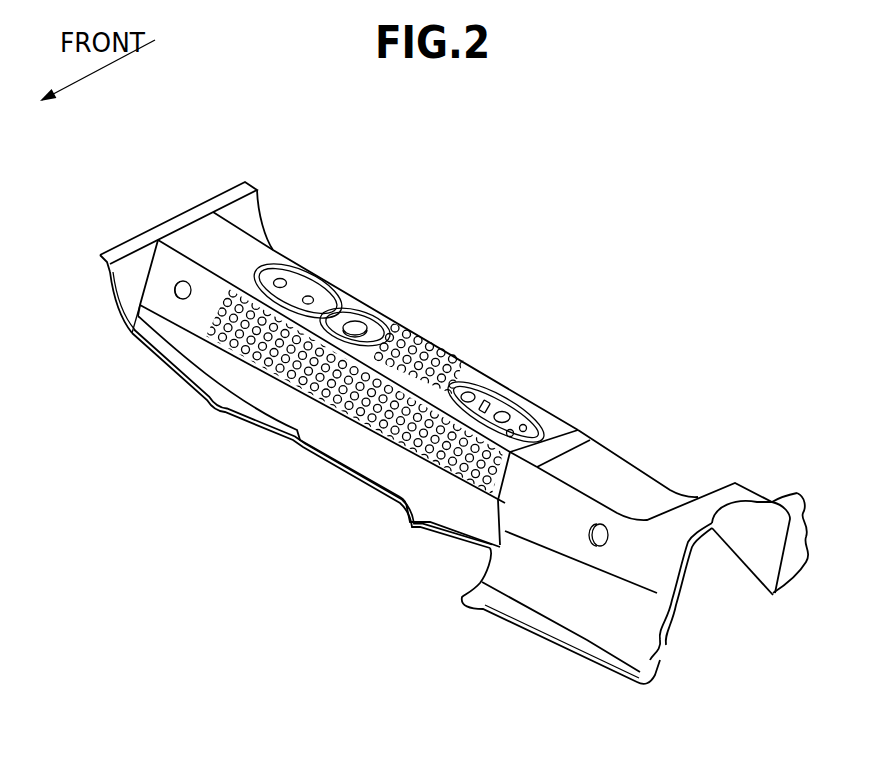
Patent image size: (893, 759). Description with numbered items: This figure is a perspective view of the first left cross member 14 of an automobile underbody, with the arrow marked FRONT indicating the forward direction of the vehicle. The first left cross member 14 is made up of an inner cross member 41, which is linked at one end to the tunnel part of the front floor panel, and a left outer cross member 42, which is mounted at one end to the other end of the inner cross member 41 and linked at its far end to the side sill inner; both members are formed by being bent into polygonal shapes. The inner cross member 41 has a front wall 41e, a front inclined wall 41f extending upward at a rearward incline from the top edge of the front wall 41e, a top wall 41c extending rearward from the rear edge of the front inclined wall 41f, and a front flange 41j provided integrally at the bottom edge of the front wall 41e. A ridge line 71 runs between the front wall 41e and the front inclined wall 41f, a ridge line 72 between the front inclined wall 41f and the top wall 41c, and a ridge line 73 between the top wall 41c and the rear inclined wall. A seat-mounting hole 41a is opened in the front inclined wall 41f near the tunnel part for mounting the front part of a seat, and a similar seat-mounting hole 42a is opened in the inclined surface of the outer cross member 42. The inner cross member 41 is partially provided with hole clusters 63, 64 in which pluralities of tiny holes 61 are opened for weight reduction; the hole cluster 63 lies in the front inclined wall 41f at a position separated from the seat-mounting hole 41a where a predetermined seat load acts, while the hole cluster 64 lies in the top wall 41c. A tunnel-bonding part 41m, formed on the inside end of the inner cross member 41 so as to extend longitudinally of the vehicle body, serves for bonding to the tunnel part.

The first left cross member 14 is at (530, 212).
The inner cross member 41 is at (357, 298).
The seat-mounting hole 41a is at (172, 285).
The top wall 41c is at (243, 258).
The front wall 41e is at (270, 403).
The front inclined wall 41f is at (158, 345).
The front flange 41j is at (181, 367).
The tunnel-bonding part 41m is at (140, 240).
The left outer cross member 42 is at (656, 473).
The seat-mounting hole 42a is at (587, 533).
The tiny holes 61 is at (417, 337).
The hole cluster 63 is at (330, 412).
The hole cluster 64 is at (440, 347).
The ridge line 71 is at (450, 487).
The ridge line 72 is at (515, 473).
The ridge line 73 is at (518, 390).